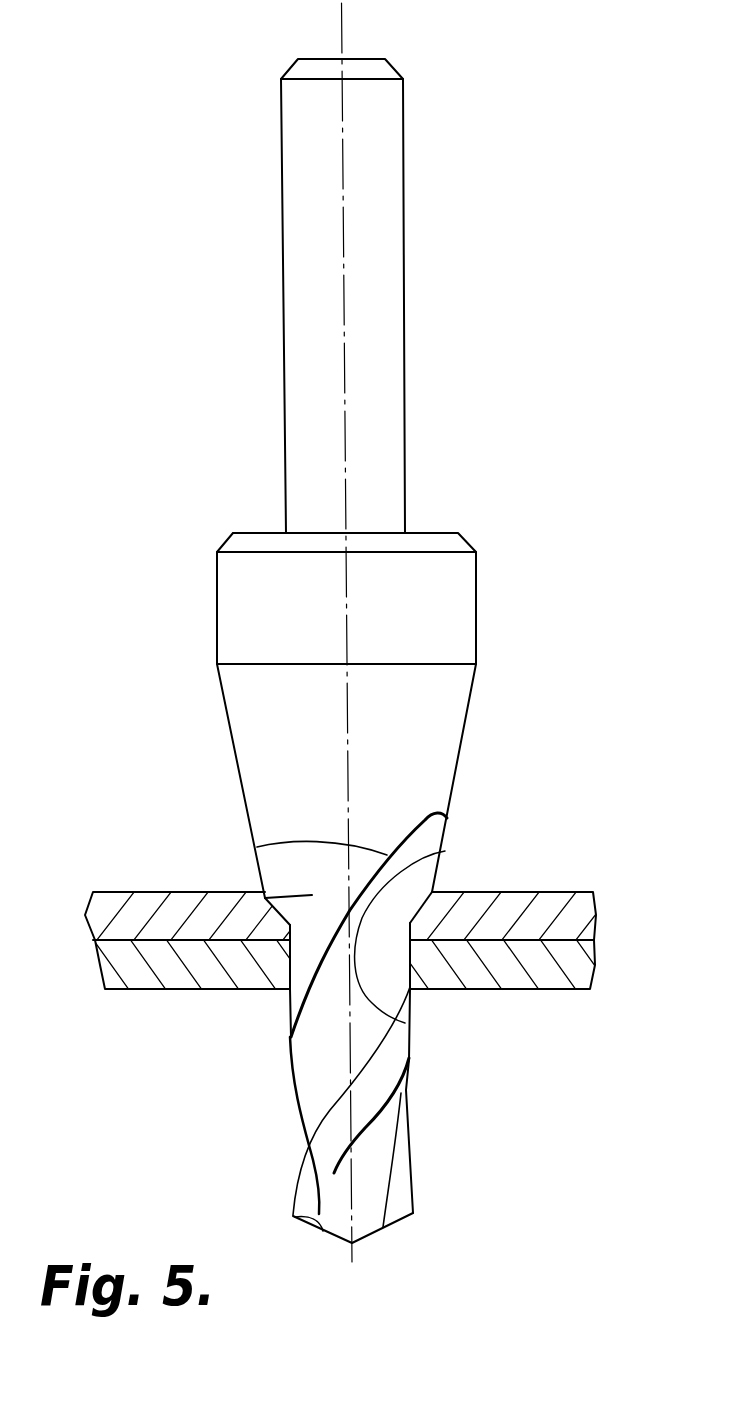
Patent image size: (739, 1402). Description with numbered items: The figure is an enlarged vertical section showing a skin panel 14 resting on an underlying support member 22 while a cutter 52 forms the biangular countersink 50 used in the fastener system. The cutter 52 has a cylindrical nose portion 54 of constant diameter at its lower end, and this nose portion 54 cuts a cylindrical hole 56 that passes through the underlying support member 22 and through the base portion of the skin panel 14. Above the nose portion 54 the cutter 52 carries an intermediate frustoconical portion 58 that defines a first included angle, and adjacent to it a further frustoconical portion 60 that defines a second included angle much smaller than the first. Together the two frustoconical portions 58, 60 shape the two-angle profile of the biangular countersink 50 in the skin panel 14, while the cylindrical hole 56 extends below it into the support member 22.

The skin panel 14 is at (573, 892).
The underlying support member 22 is at (523, 989).
The biangular countersink 50 is at (252, 882).
The cutter 52 is at (222, 600).
The cylindrical nose portion 54 is at (403, 1182).
The cylindrical hole 56 is at (286, 992).
The intermediate frustoconical portion 58 is at (415, 907).
The adjacent frustoconical portion 60 is at (432, 862).